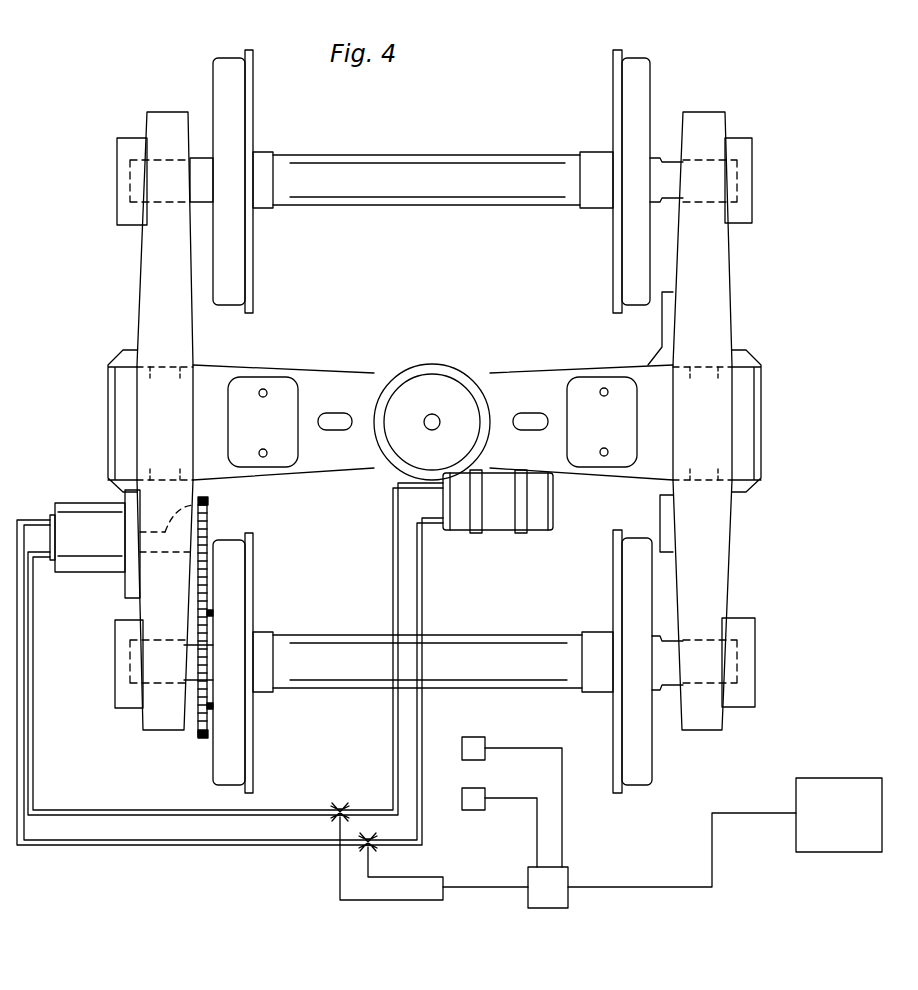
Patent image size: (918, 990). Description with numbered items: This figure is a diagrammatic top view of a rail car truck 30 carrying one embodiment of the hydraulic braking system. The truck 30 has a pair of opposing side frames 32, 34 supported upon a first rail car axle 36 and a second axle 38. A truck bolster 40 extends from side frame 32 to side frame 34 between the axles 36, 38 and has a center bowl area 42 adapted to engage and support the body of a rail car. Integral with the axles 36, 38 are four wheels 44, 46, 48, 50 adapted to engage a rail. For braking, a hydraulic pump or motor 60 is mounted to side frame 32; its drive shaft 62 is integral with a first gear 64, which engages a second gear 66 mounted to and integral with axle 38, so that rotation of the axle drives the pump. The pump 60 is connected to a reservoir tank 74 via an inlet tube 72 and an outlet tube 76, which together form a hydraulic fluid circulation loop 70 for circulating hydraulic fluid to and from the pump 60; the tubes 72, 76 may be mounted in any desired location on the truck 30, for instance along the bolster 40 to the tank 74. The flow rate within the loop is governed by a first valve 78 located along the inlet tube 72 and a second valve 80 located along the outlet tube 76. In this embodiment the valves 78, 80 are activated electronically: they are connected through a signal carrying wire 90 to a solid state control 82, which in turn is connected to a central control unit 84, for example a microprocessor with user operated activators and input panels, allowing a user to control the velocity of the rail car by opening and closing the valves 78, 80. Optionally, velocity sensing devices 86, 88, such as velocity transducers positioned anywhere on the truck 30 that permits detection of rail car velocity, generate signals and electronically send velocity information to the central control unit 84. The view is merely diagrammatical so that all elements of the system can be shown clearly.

The rail car truck 30 is at (97, 318).
The side frame 32 is at (140, 327).
The side frame 34 is at (713, 265).
The first rail car axle 36 is at (467, 193).
The second axle 38 is at (358, 650).
The truck bolster 40 is at (330, 380).
The center bowl area 42 is at (445, 385).
The wheel 44 is at (222, 78).
The wheel 46 is at (648, 70).
The wheel 48 is at (650, 758).
The wheel 50 is at (222, 752).
The hydraulic pump or motor 60 is at (85, 522).
The drive shaft 62 is at (213, 505).
The first gear 64 is at (210, 530).
The second gear 66 is at (197, 698).
The hydraulic fluid circulation loop 70 is at (49, 855).
The inlet tube 72 is at (25, 585).
The reservoir tank 74 is at (500, 525).
The outlet tube 76 is at (210, 817).
The first valve 78 is at (375, 848).
The second valve 80 is at (352, 765).
The solid state control 82 is at (565, 877).
The central control unit 84 is at (833, 782).
The velocity sensing device 86 is at (487, 740).
The velocity sensing device 88 is at (475, 812).
The signal carrying means or wire 90 is at (694, 887).